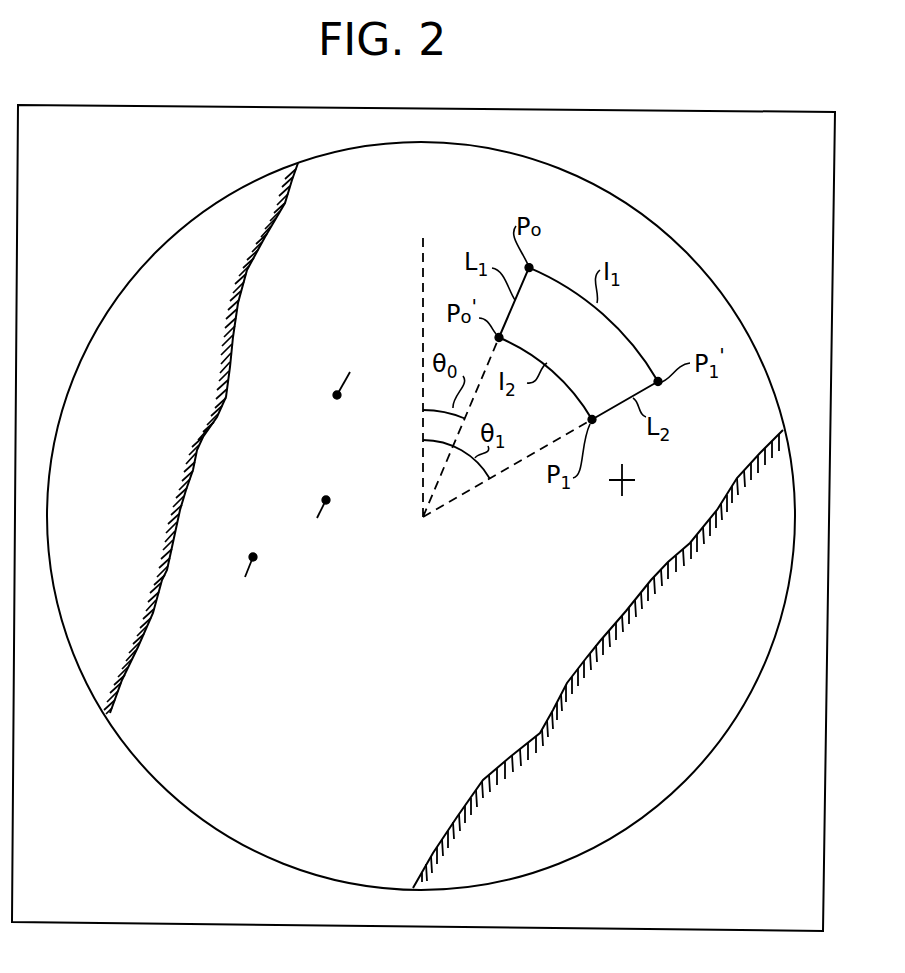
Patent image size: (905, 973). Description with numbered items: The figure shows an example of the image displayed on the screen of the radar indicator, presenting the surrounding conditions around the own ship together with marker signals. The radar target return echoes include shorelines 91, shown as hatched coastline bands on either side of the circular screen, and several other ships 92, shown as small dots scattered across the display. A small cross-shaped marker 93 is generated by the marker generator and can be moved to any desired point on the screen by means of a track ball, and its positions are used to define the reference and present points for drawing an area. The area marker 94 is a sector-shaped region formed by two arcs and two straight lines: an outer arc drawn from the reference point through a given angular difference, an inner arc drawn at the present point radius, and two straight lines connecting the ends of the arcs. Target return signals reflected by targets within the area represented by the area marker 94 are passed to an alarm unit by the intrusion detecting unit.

The shorelines 91 is at (167, 570).
The other ships 92 is at (340, 398).
The marker 93 is at (632, 472).
The area marker 94 is at (610, 373).